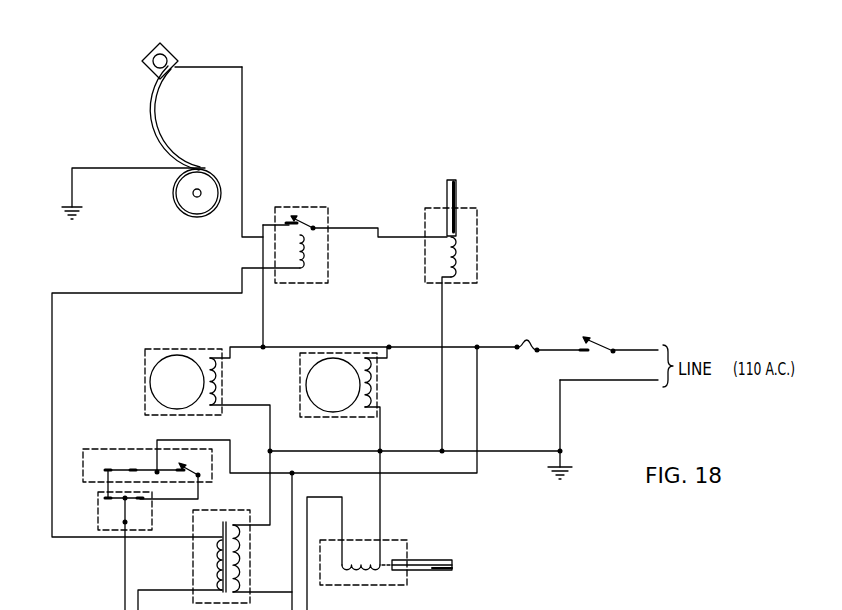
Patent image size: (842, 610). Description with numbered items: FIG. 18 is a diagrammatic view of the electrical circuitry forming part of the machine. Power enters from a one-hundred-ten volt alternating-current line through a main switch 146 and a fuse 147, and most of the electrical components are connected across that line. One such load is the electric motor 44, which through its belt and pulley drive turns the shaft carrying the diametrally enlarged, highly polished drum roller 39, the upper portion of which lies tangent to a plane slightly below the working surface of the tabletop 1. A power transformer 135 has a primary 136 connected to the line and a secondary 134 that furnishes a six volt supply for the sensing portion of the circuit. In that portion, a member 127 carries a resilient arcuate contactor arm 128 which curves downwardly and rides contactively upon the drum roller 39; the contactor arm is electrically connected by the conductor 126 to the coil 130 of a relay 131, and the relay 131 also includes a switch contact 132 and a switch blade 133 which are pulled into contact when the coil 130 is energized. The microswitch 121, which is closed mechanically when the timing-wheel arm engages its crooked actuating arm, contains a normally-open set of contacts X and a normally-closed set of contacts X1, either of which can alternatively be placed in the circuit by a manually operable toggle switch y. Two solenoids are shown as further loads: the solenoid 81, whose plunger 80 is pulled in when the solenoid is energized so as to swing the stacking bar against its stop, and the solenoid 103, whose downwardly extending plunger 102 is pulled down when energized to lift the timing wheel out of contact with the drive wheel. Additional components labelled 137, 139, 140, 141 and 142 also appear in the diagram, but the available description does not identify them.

The contactor mounting member 127 is at (170, 52).
The conductor 126 is at (217, 67).
The resilient arcuate contactor arm 128 is at (148, 117).
The drum-roller 39 is at (175, 192).
The switch contact 132 is at (288, 220).
The switch blade 133 is at (300, 217).
The relay 131 is at (330, 208).
The relay coil 130 is at (302, 256).
The plunger 102 is at (456, 195).
The solenoid 103 is at (477, 270).
The motor 137 is at (195, 352).
The electric motor 44 is at (347, 352).
The fuse 147 is at (531, 340).
The main switch 146 is at (603, 337).
The microswitch 121 is at (98, 450).
The normally-closed set of contacts X1 is at (120, 468).
The normally-open set of contacts X is at (192, 468).
The manually operable toggle switch y is at (97, 513).
The power transformer 135 is at (250, 572).
The secondary 134 is at (218, 565).
The primary 136 is at (242, 547).
The solenoid 81 is at (395, 540).
The solenoid plunger 80 is at (427, 560).
The contact 142 is at (518, 609).
The tabletop 1 is at (547, 609).
The contact 141 is at (683, 609).
The contact 139 is at (701, 606).
The contact 140 is at (746, 606).